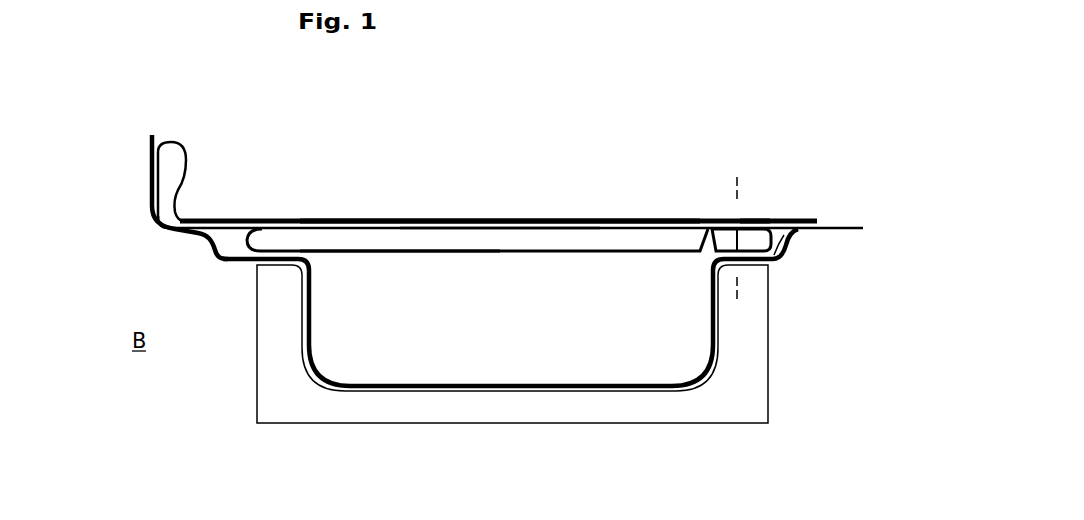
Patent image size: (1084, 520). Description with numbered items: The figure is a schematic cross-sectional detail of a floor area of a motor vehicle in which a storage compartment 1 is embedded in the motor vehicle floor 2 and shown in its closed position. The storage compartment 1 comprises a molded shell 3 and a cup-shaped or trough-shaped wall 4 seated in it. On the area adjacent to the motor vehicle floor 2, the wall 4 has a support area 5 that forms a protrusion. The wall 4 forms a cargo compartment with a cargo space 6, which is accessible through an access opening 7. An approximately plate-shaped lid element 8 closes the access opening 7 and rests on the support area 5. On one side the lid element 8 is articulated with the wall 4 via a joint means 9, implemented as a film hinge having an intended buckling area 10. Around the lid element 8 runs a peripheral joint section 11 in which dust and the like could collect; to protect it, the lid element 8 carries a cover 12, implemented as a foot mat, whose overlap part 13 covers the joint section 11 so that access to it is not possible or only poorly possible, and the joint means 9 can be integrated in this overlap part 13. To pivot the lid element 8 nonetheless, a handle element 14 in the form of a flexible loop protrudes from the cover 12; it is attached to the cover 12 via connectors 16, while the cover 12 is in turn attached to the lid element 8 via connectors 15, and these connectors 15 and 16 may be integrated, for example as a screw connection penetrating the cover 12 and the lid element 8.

The storage compartment 1 is at (664, 198).
The motor vehicle floor 2 is at (877, 218).
The molded shell 3 is at (752, 392).
The wall 4 is at (300, 342).
The support area 5 is at (206, 253).
The cargo space 6 is at (648, 336).
The access opening 7 is at (563, 272).
The lid element 8 is at (412, 243).
The joint means 9 is at (755, 203).
The intended buckling area 10 is at (715, 208).
The joint section 11 is at (230, 222).
The cover 12 is at (562, 216).
The overlap part 13 is at (249, 217).
The handle element 14 is at (180, 142).
The connectors 15 is at (485, 232).
The connectors 16 is at (157, 218).